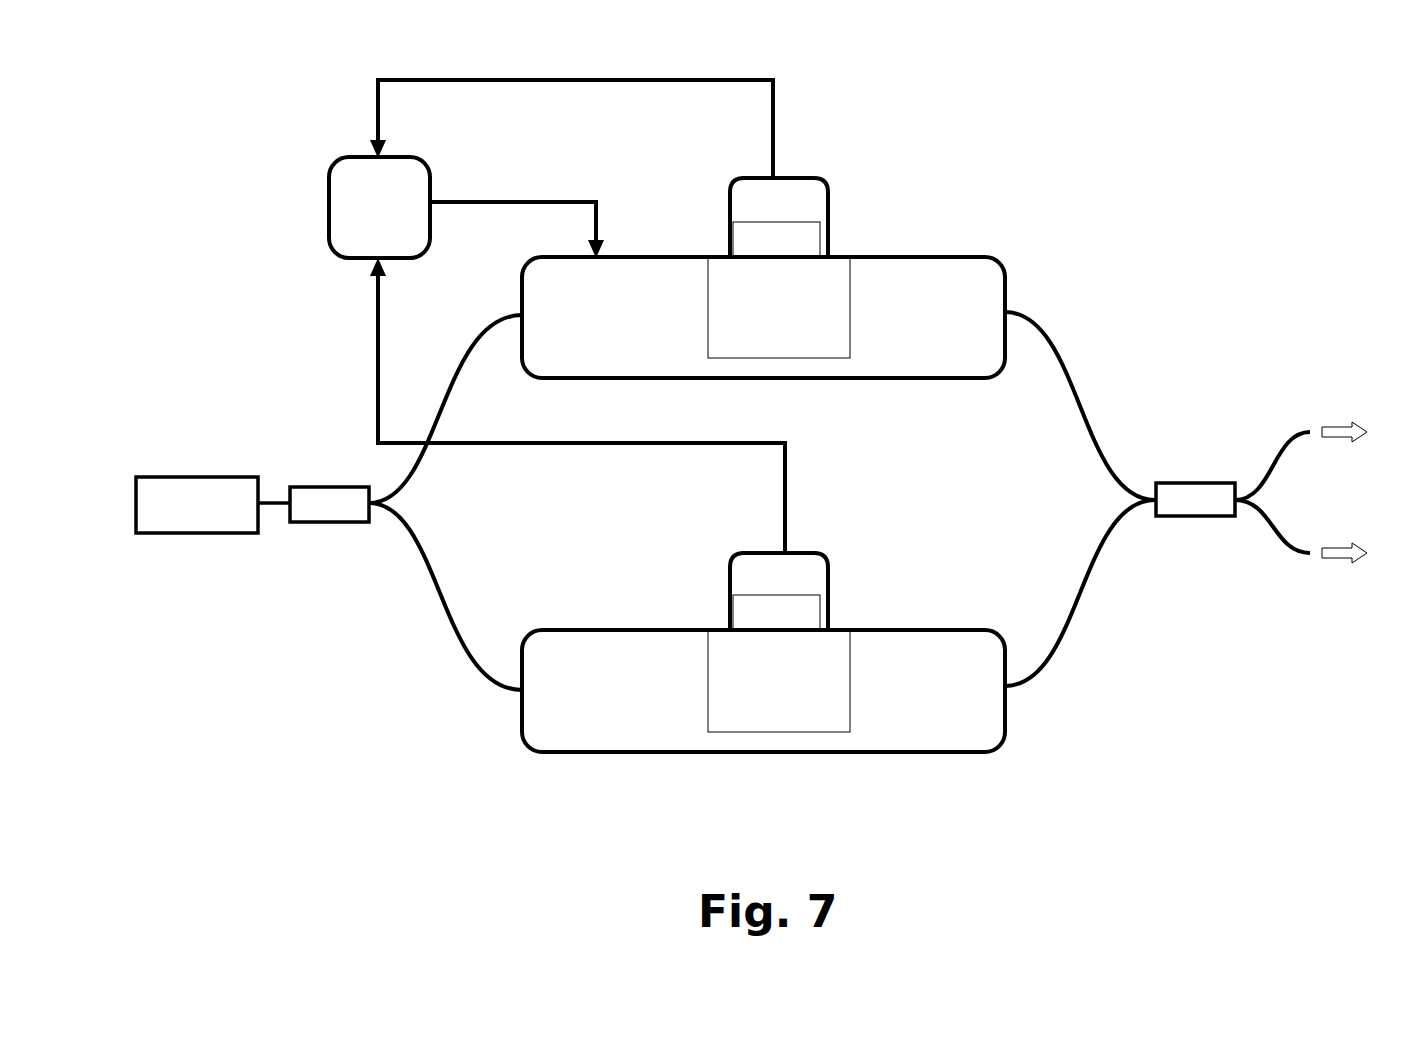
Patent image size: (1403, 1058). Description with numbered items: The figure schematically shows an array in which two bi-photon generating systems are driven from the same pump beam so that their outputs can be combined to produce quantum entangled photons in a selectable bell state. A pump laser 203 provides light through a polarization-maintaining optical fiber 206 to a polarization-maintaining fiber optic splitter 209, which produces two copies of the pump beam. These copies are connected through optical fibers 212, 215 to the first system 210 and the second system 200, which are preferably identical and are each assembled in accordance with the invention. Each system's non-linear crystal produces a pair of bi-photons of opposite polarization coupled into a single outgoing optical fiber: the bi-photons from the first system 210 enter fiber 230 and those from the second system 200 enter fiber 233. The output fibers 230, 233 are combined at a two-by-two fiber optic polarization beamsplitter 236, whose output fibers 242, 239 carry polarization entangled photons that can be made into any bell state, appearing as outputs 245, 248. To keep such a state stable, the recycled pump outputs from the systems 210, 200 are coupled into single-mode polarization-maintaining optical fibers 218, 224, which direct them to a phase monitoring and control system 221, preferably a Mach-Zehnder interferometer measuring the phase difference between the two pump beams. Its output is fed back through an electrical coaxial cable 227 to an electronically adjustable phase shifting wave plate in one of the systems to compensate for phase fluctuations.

The second system 200 is at (905, 245).
The pump laser 203 is at (203, 543).
The polarization-maintaining optical fiber 206 is at (280, 520).
The polarization-maintaining fiber optic splitter 209 is at (335, 543).
The first system 210 is at (785, 760).
The first splitter arm 212 is at (478, 356).
The second splitter arm 215 is at (477, 687).
The single-mode polarization-maintaining optical fiber 218 is at (797, 498).
The phase monitoring and control system 221 is at (312, 212).
The single-mode polarization-maintaining optical fiber 224 is at (565, 68).
The electrical coaxial cable 227 is at (519, 192).
The fiber 230 is at (1037, 698).
The fiber 233 is at (1059, 332).
The 2×2 fiber optic polarization beamsplitter 236 is at (1201, 530).
The output fiber 239 is at (1290, 565).
The output fiber 242 is at (1290, 422).
The output 245 is at (1338, 410).
The output 248 is at (1338, 582).